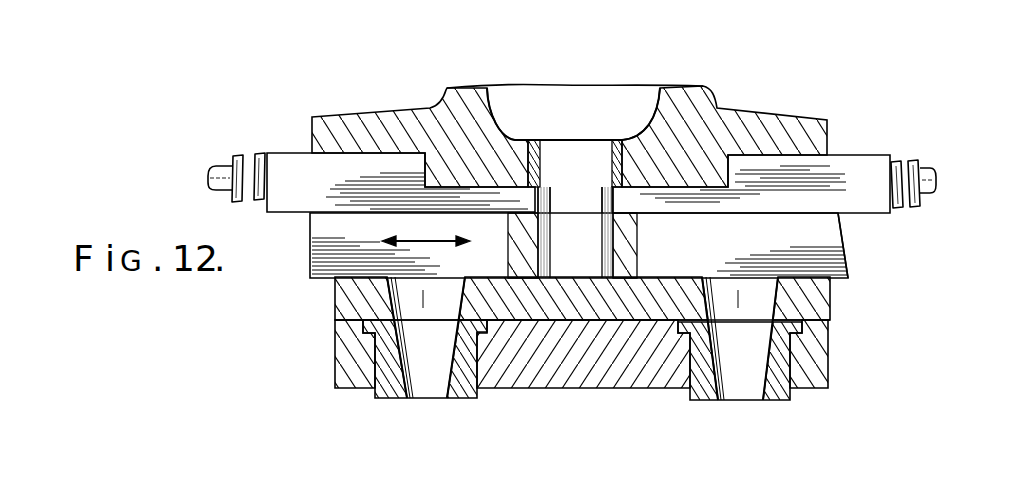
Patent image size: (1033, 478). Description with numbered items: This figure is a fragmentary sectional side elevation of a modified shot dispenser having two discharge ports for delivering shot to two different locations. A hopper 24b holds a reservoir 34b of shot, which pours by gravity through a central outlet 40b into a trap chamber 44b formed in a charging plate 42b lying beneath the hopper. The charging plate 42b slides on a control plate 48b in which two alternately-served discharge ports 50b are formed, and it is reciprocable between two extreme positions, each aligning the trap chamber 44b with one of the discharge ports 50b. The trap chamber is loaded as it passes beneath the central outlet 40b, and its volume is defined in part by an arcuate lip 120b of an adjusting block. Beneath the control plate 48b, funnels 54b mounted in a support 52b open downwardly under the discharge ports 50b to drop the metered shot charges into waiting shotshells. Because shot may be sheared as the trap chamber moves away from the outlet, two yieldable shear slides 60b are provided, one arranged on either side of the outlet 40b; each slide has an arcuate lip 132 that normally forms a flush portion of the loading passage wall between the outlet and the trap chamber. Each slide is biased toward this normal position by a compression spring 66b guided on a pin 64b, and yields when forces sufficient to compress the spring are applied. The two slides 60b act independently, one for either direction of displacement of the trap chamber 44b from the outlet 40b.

The hopper 24b is at (440, 90).
The reservoir 34b is at (560, 113).
The central outlet 40b is at (613, 148).
The arcuate lip 132 is at (602, 192).
The arcuate lip 120b is at (600, 248).
The shear slides 60b is at (333, 181).
The compression spring 66b is at (243, 156).
The pin 64b is at (218, 190).
The trap chamber 44b is at (640, 241).
The charging plate 42b is at (848, 260).
The control plate 48b is at (335, 299).
The discharge ports 50b is at (460, 283).
The support 52b is at (335, 352).
The funnels 54b is at (378, 397).